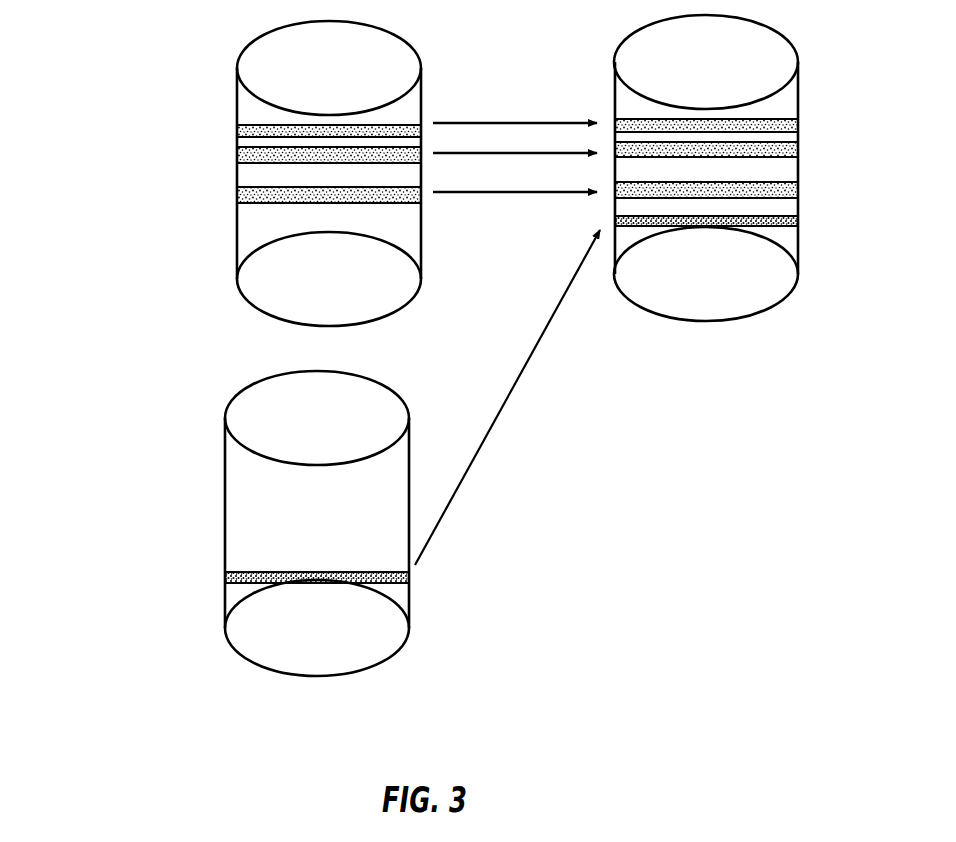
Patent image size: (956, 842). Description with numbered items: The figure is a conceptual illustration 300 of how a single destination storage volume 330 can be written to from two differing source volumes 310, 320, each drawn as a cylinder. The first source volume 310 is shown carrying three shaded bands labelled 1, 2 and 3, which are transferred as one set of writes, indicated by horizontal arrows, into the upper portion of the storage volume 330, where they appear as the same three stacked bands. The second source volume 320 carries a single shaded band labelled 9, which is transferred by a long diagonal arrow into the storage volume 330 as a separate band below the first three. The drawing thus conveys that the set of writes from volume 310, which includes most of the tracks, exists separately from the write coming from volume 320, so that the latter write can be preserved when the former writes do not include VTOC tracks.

The conceptual illustration 300 is at (100, 684).
The first storage volume 310 is at (260, 190).
The second storage volume 320 is at (295, 542).
The storage volume 330 is at (735, 187).
The layer 1 is at (304, 127).
The layer 2 is at (304, 164).
The layer 3 is at (304, 197).
The layer 9 is at (312, 548).